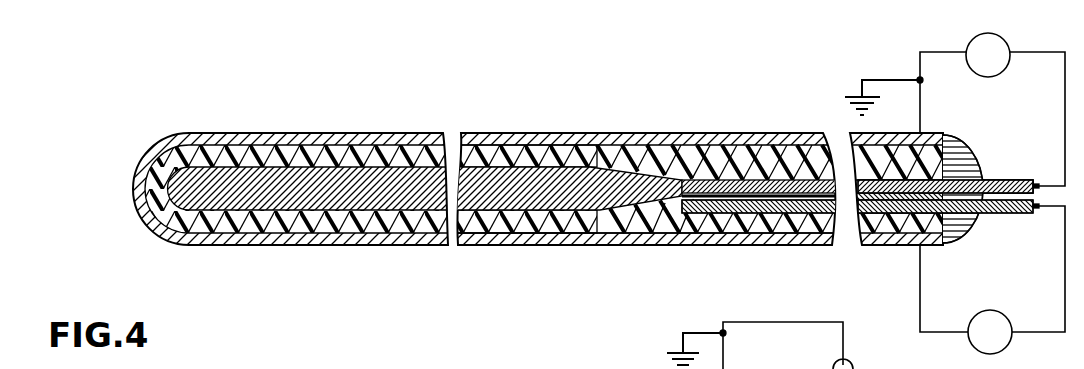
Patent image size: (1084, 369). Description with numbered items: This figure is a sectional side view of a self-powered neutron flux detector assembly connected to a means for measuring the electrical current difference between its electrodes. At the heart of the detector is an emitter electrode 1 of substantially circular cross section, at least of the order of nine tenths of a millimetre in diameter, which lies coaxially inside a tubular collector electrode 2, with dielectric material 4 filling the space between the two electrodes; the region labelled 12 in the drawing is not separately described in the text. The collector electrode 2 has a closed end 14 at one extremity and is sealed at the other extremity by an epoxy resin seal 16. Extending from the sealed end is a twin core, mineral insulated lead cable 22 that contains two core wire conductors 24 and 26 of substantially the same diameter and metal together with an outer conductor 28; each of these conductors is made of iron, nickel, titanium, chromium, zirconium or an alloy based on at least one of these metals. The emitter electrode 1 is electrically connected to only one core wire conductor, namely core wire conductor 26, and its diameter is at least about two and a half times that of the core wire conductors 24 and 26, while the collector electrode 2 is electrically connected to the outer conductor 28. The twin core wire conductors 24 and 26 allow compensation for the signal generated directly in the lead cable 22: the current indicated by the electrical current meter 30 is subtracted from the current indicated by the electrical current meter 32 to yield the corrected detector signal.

The emitter electrode 1 is at (150, 232).
The collector electrode 2 is at (410, 243).
The dielectric material 4 is at (498, 226).
The center conductor 12 is at (585, 188).
The closed end 14 is at (135, 207).
The epoxy resin seal 16 is at (970, 175).
The lead cable 22 is at (853, 187).
The core wire conductor 24 is at (853, 190).
The core wire conductor 26 is at (827, 133).
The outer conductor 28 is at (908, 133).
The electrical current meter 30 is at (990, 332).
The electrical current meter 32 is at (988, 55).